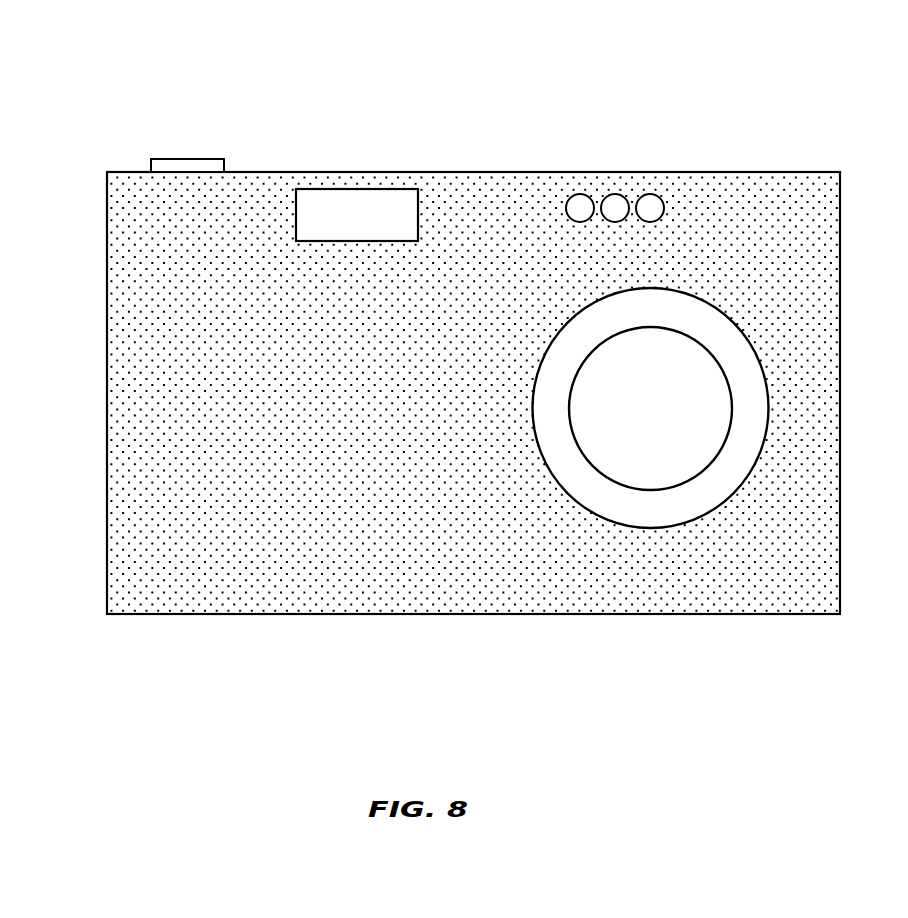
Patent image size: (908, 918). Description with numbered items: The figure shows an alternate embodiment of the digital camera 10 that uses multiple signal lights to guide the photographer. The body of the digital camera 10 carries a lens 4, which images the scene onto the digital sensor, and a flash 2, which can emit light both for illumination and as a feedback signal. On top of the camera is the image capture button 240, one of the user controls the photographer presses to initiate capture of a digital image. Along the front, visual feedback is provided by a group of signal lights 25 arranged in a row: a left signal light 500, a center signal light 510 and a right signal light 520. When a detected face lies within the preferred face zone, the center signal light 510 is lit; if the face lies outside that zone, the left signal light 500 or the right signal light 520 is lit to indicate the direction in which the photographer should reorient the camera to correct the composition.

The digital camera 10 is at (107, 395).
The image capture button 240 is at (186, 158).
The flash 2 is at (357, 189).
The signal lights 25 is at (595, 112).
The left signal light 500 is at (576, 195).
The center signal light 510 is at (613, 195).
The right signal light 520 is at (661, 165).
The lens 4 is at (768, 407).